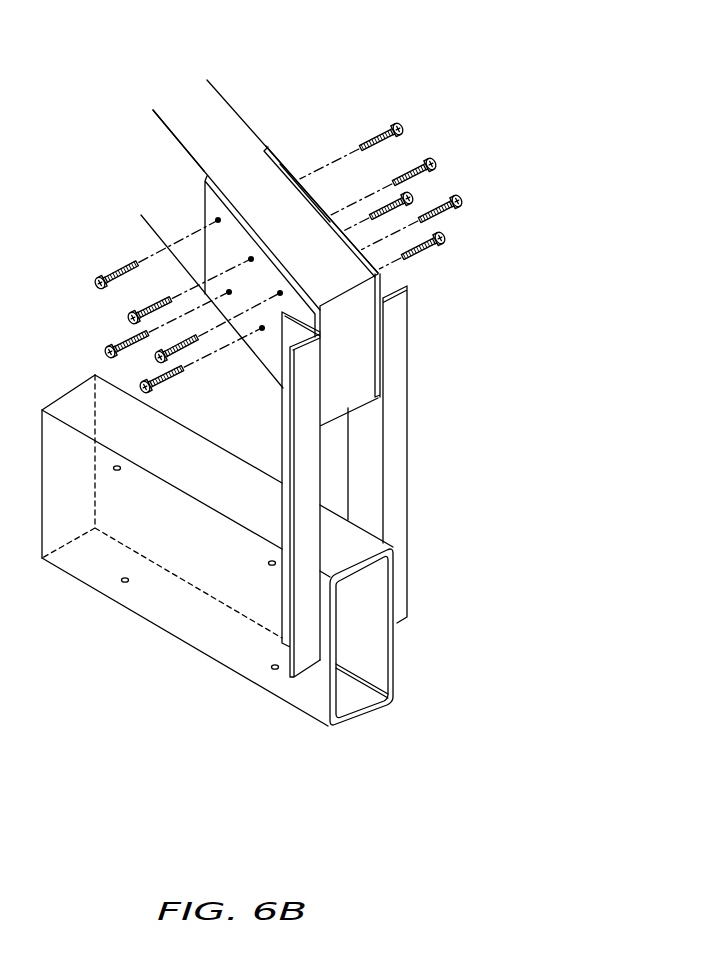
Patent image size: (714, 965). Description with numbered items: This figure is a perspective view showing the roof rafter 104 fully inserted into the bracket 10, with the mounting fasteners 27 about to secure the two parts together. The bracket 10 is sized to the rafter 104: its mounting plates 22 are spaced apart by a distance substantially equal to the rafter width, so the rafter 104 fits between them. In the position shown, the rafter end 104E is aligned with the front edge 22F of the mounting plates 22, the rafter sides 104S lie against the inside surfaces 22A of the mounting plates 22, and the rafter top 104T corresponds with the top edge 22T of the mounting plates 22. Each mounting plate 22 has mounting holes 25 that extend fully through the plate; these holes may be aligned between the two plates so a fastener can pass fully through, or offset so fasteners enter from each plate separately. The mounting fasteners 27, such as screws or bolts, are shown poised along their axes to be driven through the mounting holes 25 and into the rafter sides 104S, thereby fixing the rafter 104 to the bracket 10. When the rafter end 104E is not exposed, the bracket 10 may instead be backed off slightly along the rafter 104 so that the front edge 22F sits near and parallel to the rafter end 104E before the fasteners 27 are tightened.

The bracket 10 is at (132, 653).
The mounting plates 22 is at (296, 372).
The inside surfaces of the mounting plates 22A is at (305, 172).
The top edge of the mounting plates 22T is at (320, 198).
The front edge of the mounting plates 22F is at (380, 280).
The mounting holes 25 is at (262, 330).
The mounting fasteners 27 is at (461, 197).
The roof rafter 104 is at (274, 330).
The rafter top 104T is at (192, 125).
The rafter sides 104S is at (243, 123).
The rafter end 104E is at (355, 338).